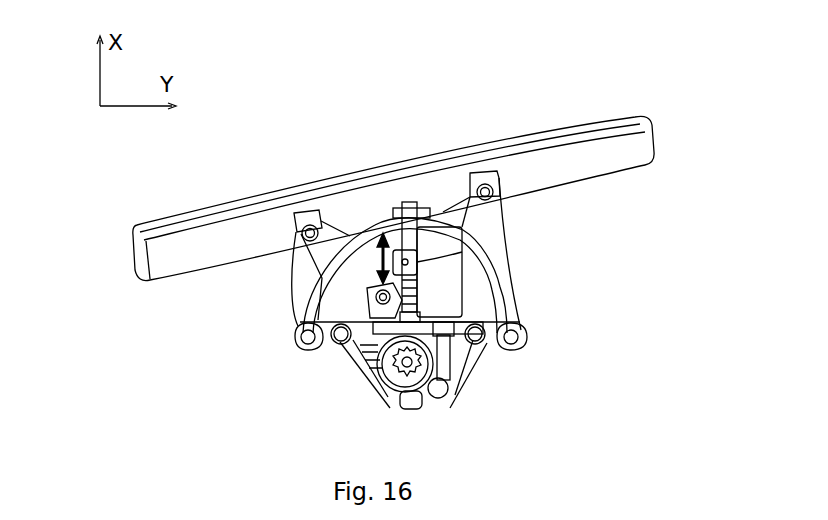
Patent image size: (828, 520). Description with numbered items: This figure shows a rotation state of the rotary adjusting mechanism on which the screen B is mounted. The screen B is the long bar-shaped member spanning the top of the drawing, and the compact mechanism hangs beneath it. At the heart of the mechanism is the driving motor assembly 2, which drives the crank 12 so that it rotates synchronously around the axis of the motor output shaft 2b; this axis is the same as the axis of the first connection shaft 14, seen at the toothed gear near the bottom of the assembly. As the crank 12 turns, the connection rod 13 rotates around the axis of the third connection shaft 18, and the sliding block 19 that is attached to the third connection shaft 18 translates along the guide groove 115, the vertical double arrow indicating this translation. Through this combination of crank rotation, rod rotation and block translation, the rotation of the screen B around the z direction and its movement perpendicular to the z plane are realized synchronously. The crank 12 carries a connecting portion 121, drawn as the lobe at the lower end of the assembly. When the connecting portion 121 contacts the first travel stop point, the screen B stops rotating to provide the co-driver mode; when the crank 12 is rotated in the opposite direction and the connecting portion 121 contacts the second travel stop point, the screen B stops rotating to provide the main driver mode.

The screen B is at (575, 133).
The connection rod 13 is at (490, 217).
The guide groove 115 is at (408, 213).
The third connection shaft 18 is at (455, 242).
The sliding block 19 is at (392, 225).
The driving motor assembly 2 is at (453, 293).
The motor output shaft 2b is at (394, 400).
The first connection shaft 14 is at (394, 409).
The crank 12 is at (481, 393).
The connecting portion 121 is at (455, 412).